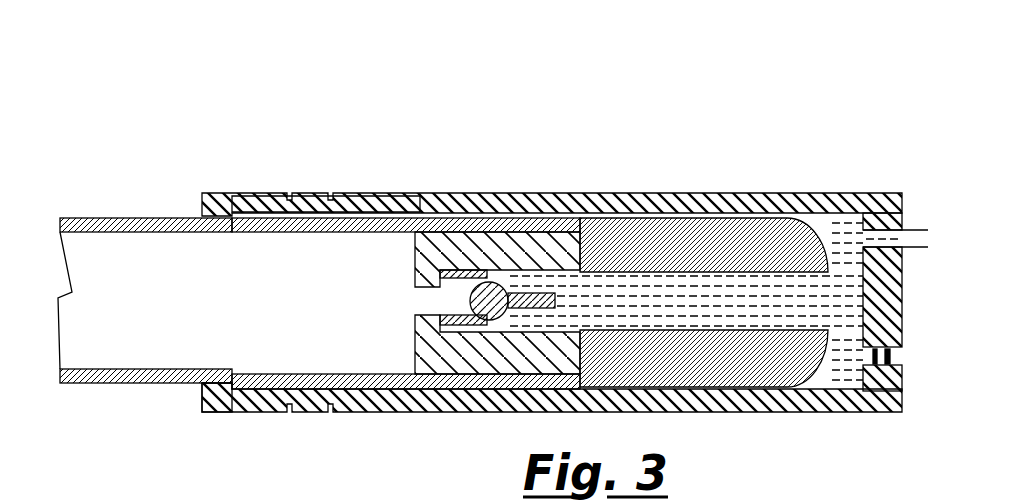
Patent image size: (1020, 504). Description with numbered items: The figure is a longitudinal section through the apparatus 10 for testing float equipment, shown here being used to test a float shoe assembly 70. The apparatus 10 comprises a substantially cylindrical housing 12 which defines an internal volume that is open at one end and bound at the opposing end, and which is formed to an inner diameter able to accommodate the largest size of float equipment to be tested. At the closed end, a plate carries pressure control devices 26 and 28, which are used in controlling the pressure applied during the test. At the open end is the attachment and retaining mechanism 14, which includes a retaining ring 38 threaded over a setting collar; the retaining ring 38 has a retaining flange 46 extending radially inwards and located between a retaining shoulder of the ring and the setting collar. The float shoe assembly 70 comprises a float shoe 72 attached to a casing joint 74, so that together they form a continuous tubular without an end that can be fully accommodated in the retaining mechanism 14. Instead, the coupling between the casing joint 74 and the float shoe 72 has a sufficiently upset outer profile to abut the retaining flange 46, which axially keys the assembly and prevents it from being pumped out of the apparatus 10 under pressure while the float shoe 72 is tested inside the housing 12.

The apparatus 10 is at (235, 123).
The housing 12 is at (645, 195).
The attachment and retaining mechanism 14 is at (312, 187).
The pressure control device 26 is at (905, 238).
The pressure control device 28 is at (897, 357).
The retaining ring 38 is at (202, 400).
The retaining flange 46 is at (225, 193).
The float shoe assembly 70 is at (96, 165).
The float shoe 72 is at (745, 372).
The casing joint 74 is at (107, 218).